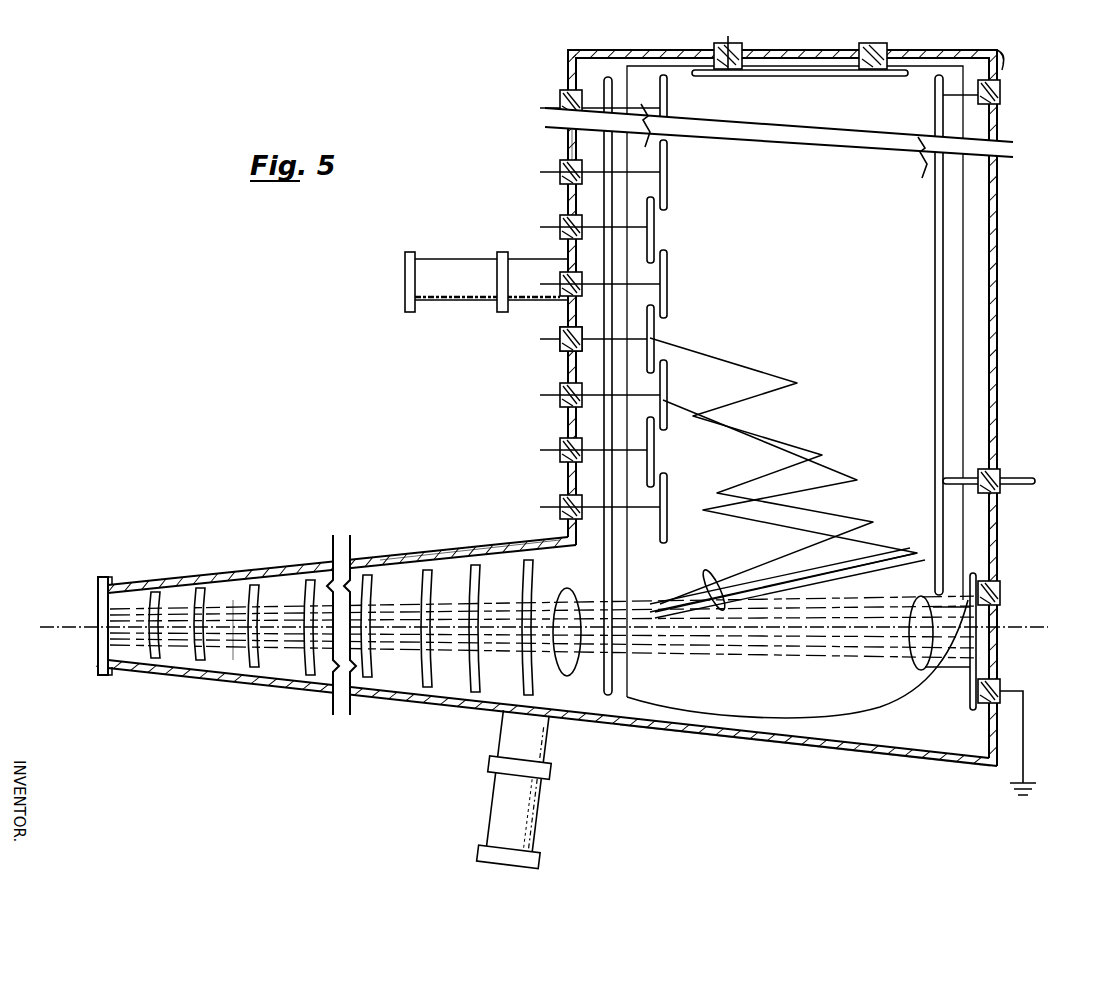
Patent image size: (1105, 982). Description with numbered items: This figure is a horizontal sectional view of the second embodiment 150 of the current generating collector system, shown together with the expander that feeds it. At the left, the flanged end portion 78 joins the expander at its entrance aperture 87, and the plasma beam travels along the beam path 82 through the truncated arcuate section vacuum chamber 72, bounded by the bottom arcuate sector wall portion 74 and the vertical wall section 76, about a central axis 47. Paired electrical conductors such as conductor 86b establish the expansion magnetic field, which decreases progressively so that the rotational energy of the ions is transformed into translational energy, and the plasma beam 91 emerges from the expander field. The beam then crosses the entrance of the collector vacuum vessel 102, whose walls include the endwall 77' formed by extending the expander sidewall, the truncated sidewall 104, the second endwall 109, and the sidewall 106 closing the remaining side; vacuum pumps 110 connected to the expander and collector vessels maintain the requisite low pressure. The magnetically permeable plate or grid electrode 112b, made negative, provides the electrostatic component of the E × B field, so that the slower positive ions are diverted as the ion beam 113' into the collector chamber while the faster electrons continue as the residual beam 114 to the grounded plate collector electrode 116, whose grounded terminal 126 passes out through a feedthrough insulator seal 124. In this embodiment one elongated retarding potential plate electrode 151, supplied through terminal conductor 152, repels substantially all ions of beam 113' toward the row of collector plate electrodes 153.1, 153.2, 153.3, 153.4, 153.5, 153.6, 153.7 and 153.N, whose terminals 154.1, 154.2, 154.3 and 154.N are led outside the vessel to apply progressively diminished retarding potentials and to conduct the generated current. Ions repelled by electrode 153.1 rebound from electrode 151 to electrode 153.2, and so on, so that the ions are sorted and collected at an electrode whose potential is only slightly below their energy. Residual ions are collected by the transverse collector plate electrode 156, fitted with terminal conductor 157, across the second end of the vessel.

The beam axis 47 is at (1036, 628).
The truncated arcuate section vacuum chamber 72 is at (293, 600).
The bottom arcuate sector wall portion 74 is at (408, 586).
The vertical wall section 76 is at (403, 555).
The endwall of the collector vessel 77' is at (805, 754).
The flanged end portion 78 is at (107, 576).
The beam path 82 is at (233, 610).
The electrical conductor 86b is at (467, 689).
The entrance aperture 87 is at (98, 610).
The plasma beam 91 is at (566, 643).
The vacuum vessel 102 is at (998, 50).
The truncated sidewall 104 is at (568, 140).
The sidewall 106 is at (998, 130).
The second endwall 109 is at (851, 52).
The vacuum pump 110 is at (455, 266).
The plate or grid electrode 112b is at (824, 214).
The ion beam 113' is at (787, 581).
The residual beam 114 is at (915, 665).
The plate collector electrode 116 is at (976, 662).
The feedthrough insulator seal 124 is at (560, 352).
The grounded terminal 126 is at (1023, 713).
The second embodiment of current generating collector system 150 is at (1008, 304).
The elongated retarding potential plate electrode 151 is at (935, 303).
The terminal conductor 152 is at (1015, 480).
The collector plate electrode 153.1 is at (667, 514).
The collector plate electrode 153.2 is at (654, 451).
The collector plate electrode 153.3 is at (667, 389).
The collector plate electrode 153.4 is at (654, 338).
The collector plate electrode 153.5 is at (667, 285).
The collector plate electrode 153.6 is at (654, 228).
The collector plate electrode 153.7 is at (667, 173).
The collector plate electrode 153.N is at (667, 98).
The terminal 154.1 is at (553, 508).
The terminal 154.2 is at (553, 452).
The terminal 154.3 is at (553, 396).
The terminal 154.N is at (545, 102).
The transverse collector plate electrode 156 is at (850, 77).
The terminal conductor 157 is at (726, 40).